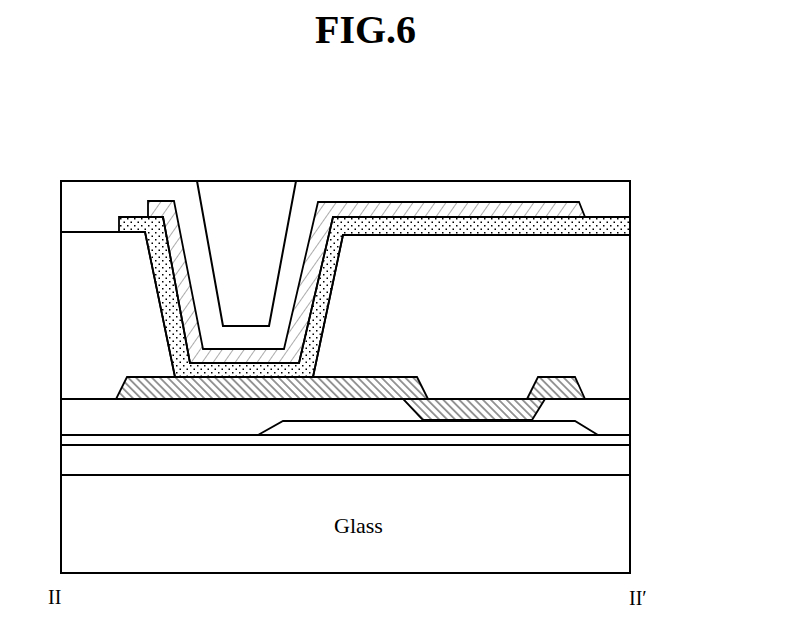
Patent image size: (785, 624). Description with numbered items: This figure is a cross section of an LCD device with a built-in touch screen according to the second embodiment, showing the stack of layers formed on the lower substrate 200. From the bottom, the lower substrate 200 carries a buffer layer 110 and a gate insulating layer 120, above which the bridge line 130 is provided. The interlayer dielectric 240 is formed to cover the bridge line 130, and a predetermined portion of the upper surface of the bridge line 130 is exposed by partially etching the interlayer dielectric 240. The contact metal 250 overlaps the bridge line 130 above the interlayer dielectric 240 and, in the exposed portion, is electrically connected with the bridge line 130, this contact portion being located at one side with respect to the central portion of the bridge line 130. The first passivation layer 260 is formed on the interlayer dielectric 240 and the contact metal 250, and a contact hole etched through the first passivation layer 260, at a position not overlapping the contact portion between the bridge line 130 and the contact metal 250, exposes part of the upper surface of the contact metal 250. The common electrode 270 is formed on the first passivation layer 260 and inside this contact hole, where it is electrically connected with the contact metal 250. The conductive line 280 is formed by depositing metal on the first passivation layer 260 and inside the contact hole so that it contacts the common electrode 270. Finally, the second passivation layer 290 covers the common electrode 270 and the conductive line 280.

The lower substrate 200 is at (413, 128).
The second passivation layer 290 is at (623, 195).
The conductive line 280 is at (570, 207).
The common electrode 270 is at (623, 227).
The first passivation layer 260 is at (623, 317).
The contact metal 250 is at (383, 377).
The interlayer dielectric 240 is at (623, 405).
The bridge line 130 is at (573, 432).
The gate insulating layer 120 is at (623, 440).
The buffer layer 110 is at (623, 463).